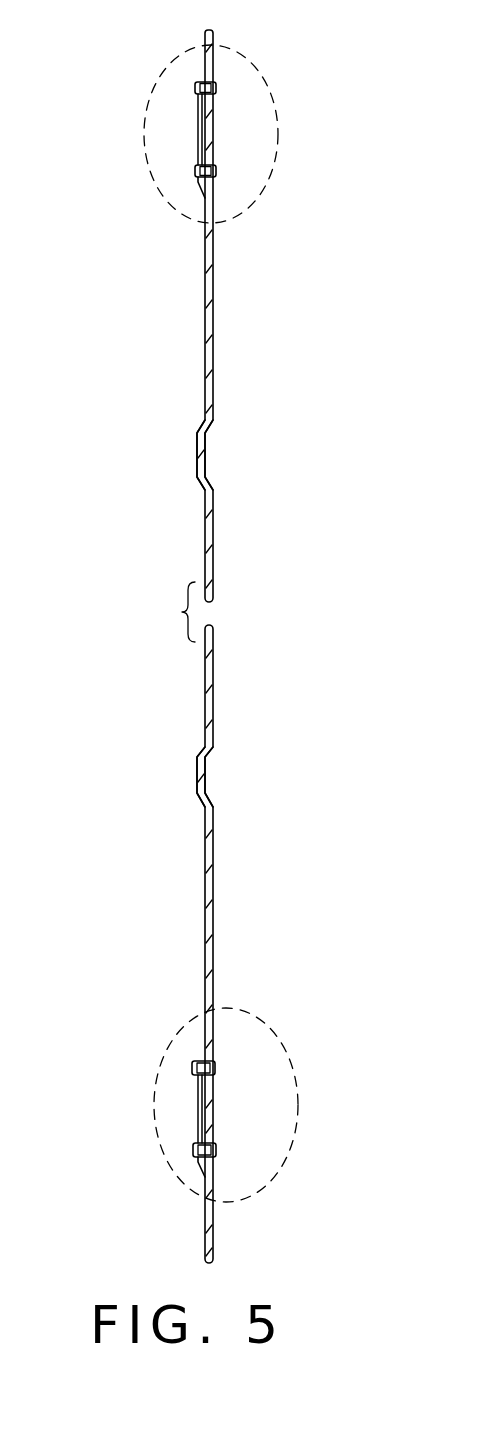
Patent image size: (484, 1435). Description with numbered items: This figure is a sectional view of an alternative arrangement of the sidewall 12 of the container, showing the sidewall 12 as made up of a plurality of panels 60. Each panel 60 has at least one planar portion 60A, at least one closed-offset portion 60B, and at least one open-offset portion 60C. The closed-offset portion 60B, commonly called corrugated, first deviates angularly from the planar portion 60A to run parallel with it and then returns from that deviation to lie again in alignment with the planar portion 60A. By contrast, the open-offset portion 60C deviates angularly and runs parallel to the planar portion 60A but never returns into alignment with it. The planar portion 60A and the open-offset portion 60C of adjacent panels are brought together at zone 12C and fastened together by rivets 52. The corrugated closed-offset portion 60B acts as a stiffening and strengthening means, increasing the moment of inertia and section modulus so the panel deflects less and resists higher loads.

The sidewall 12 is at (90, 348).
The zone 12C is at (273, 176).
The rivets 52 is at (198, 82).
The panels 60 is at (235, 415).
The planar portion 60A is at (212, 121).
The closed-offset portion 60B is at (198, 448).
The open-offset portion 60C is at (200, 126).